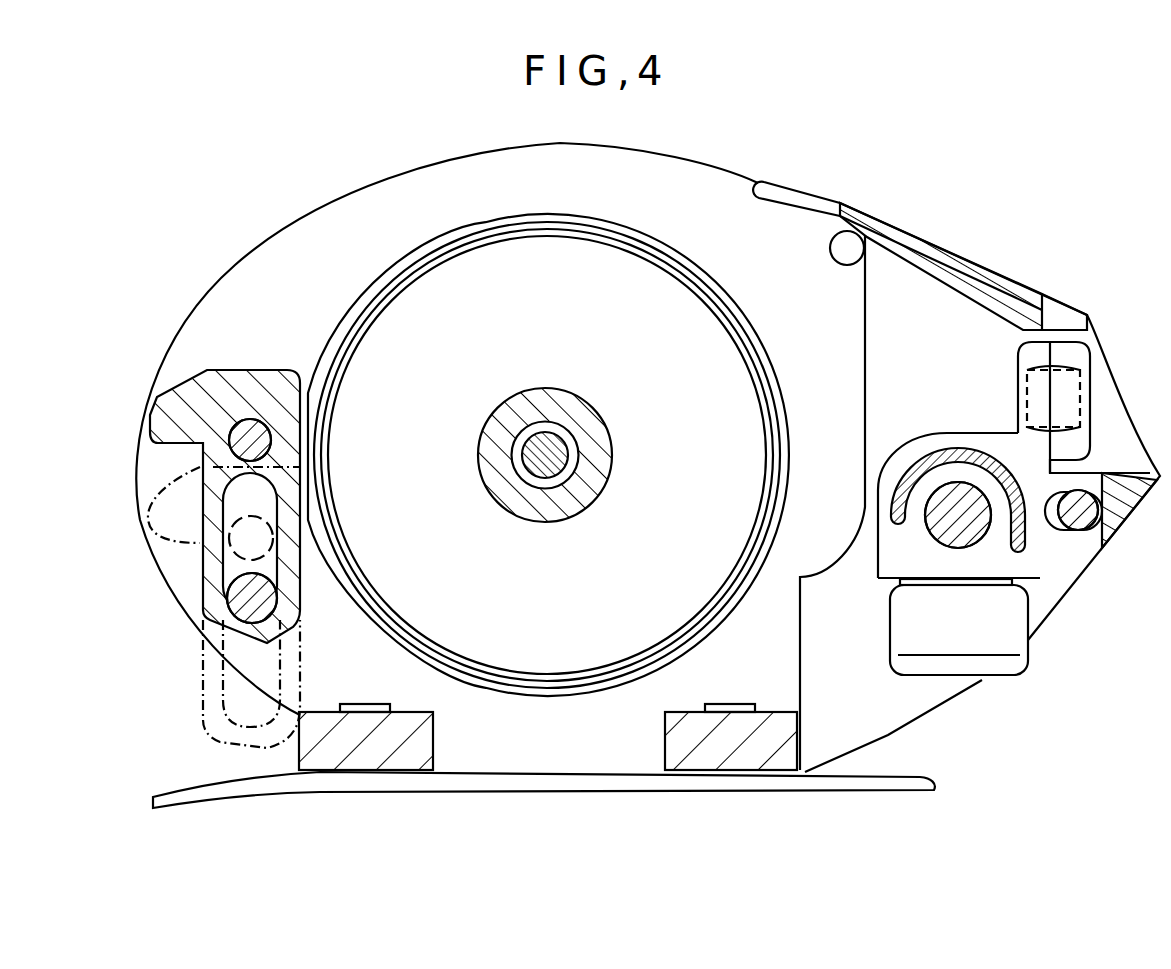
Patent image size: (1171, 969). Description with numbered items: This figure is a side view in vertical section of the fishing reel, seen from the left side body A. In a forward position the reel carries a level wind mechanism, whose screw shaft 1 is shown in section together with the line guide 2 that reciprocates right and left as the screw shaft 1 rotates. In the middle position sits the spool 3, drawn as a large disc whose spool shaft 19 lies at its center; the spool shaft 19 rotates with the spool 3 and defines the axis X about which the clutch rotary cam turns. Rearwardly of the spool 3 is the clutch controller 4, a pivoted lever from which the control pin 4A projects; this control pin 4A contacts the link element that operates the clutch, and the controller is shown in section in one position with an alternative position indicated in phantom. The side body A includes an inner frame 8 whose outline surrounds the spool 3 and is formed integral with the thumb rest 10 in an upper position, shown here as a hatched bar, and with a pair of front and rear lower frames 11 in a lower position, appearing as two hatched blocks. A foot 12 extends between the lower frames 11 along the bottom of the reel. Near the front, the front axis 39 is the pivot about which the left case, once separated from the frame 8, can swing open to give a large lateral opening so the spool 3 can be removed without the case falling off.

The screw shaft 1 is at (957, 500).
The line guide 2 is at (912, 452).
The spool 3 is at (738, 373).
The clutch controller 4 is at (273, 375).
The control pin 4A is at (245, 420).
The inner frame 8 is at (300, 243).
The thumb rest 10 is at (958, 252).
The lower frames 11 is at (418, 742).
The foot 12 is at (565, 790).
The spool shaft 19 is at (565, 445).
The front axis 39 is at (1075, 530).
The left side body A is at (237, 278).
The axis X is at (548, 462).